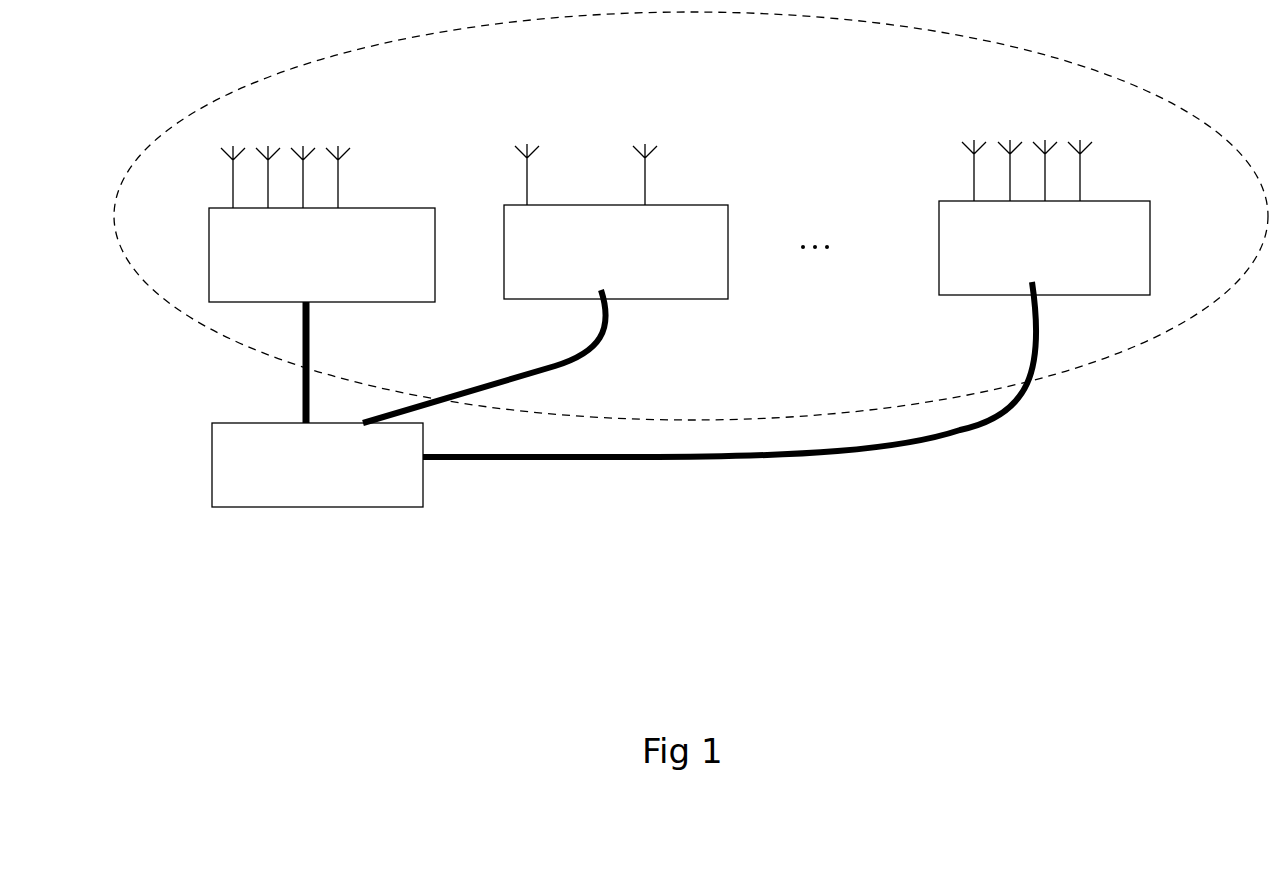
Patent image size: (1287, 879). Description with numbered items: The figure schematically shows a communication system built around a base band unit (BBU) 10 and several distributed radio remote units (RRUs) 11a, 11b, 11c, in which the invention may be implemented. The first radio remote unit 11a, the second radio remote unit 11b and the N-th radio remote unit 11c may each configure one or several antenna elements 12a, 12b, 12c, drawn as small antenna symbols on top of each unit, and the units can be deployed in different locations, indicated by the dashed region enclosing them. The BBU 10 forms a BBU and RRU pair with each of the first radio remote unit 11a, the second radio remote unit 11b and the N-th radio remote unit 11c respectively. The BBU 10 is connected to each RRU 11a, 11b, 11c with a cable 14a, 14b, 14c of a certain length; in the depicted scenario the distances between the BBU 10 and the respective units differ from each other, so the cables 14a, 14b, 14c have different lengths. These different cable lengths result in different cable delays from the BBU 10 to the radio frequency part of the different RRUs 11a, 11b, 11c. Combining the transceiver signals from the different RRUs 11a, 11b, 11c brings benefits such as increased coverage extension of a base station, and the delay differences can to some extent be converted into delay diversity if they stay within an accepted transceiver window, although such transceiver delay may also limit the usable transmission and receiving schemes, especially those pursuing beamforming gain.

The base band unit (BBU) 10 is at (200, 458).
The radio remote unit RRU i=1 11a is at (190, 252).
The radio remote unit RRU 2 11b is at (483, 242).
The radio remote unit RRU N 11c is at (920, 245).
The antenna elements 12a is at (341, 135).
The antenna elements 12b is at (540, 135).
The antenna elements 12c is at (1003, 128).
The cable 14a is at (318, 362).
The cable 14b is at (602, 360).
The cable 14c is at (1050, 352).